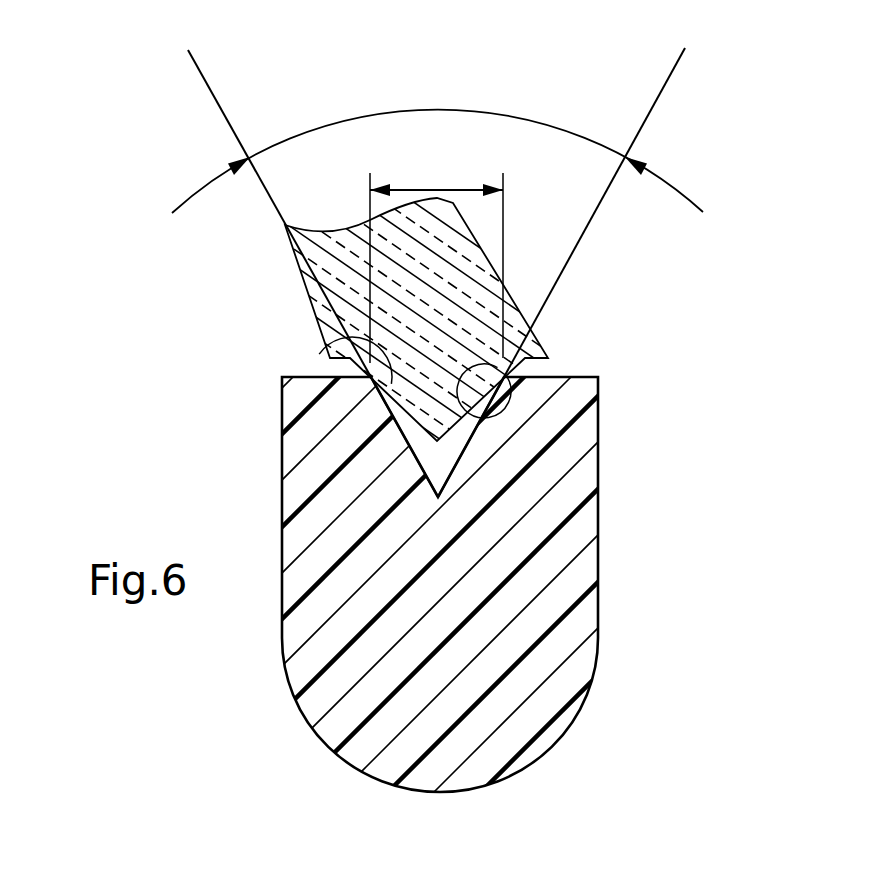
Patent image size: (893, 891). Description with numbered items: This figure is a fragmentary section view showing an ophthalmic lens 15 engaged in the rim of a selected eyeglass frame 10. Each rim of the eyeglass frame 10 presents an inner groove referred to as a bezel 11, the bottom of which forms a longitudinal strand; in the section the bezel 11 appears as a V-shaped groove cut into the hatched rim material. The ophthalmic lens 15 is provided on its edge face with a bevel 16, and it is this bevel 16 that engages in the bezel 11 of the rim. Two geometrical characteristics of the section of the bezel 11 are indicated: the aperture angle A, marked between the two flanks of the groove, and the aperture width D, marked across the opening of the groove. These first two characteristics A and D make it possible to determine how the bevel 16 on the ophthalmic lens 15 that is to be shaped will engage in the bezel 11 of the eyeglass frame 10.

The eyeglass frame 10 is at (598, 423).
The bezel 11 is at (498, 368).
The ophthalmic lens 15 is at (304, 278).
The bevel 16 is at (319, 354).
The aperture angle A is at (388, 113).
The aperture width D is at (448, 190).